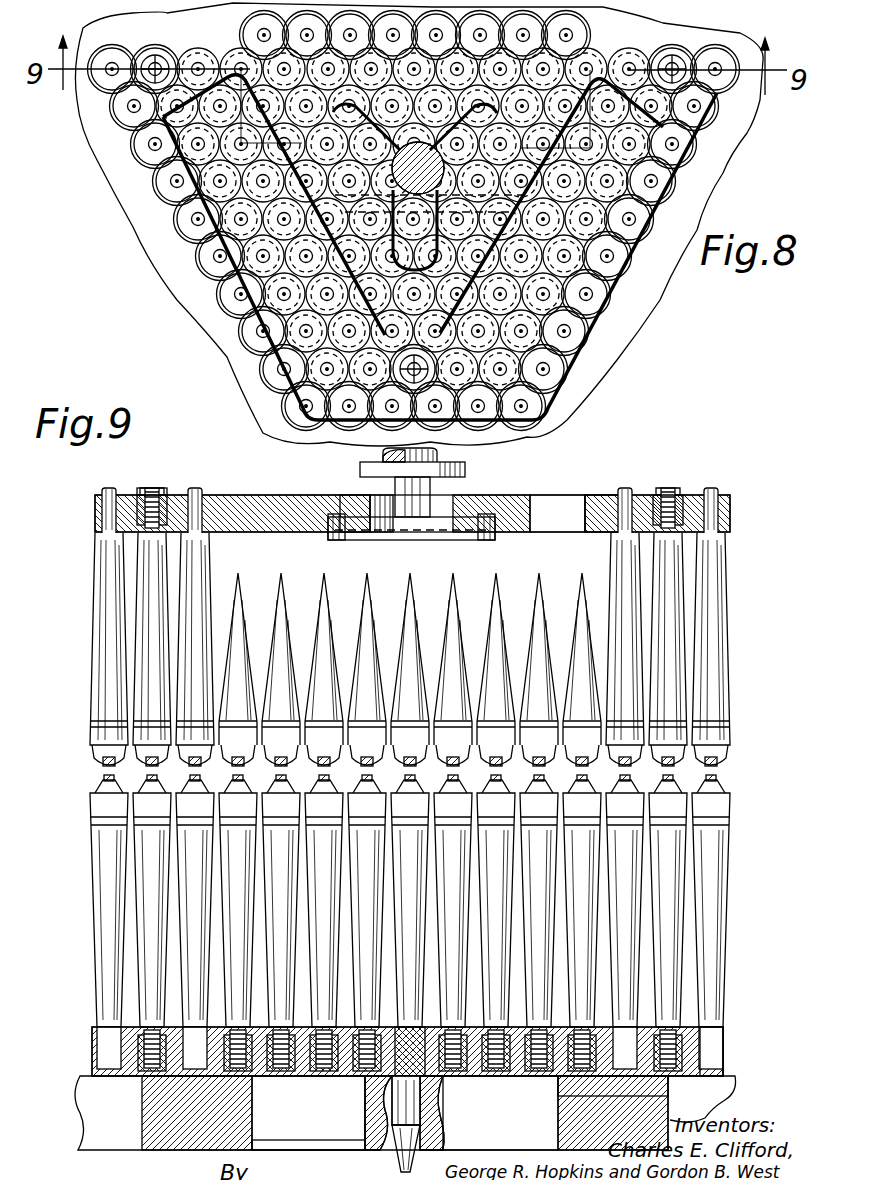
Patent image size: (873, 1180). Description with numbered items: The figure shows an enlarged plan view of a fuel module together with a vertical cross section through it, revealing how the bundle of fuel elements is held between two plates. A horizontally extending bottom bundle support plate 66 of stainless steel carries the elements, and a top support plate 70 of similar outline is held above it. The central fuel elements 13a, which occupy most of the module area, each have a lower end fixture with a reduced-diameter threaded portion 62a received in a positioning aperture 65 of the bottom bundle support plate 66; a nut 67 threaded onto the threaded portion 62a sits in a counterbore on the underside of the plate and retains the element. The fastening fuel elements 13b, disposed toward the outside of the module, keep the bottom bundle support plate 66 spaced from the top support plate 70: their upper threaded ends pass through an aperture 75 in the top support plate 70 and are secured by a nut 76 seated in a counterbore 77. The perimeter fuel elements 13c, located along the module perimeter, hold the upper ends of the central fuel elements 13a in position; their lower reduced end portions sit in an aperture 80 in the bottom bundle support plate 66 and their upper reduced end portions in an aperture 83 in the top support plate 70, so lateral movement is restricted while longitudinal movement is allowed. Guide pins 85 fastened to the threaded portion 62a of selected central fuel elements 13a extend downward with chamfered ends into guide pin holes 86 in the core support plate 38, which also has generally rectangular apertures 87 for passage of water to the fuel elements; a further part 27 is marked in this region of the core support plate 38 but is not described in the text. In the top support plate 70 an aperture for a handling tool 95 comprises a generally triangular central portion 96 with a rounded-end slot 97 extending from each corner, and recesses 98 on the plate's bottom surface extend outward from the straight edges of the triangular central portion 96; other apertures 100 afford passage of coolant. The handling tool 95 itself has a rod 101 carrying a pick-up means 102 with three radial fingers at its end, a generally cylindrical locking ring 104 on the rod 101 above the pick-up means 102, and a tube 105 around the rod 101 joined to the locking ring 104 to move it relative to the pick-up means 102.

In FIG. 8, the apertures 100 is at (120, 146).
In FIG. 9, the apertures 100 is at (567, 505).
In FIG. 8, the triangular central portion 96 is at (440, 88).
In FIG. 9, the triangular central portion 96 is at (350, 495).
In FIG. 8, the slot 97 is at (333, 112).
In FIG. 8, the recesses 98 is at (435, 160).
In FIG. 9, the top support plate 70 is at (730, 518).
In FIG. 9, the aperture 75 is at (137, 527).
In FIG. 9, the nut 76 is at (143, 490).
In FIG. 9, the counterbore 77 is at (170, 497).
In FIG. 9, the aperture 83 is at (615, 495).
In FIG. 9, the handling tool 95 is at (455, 538).
In FIG. 9, the rod 101 is at (413, 503).
In FIG. 9, the pick-up means 102 is at (480, 537).
In FIG. 9, the locking ring 104 is at (465, 470).
In FIG. 9, the tube 105 is at (440, 460).
In FIG. 9, the central fuel elements 13a is at (325, 573).
In FIG. 9, the fastening fuel element 13b is at (147, 613).
In FIG. 9, the perimeter fuel elements 13c is at (107, 583).
In FIG. 9, the positioning aperture 65 is at (693, 1024).
In FIG. 9, the bottom bundle support plate 66 is at (725, 1056).
In FIG. 9, the core support plate 38 is at (197, 1135).
In FIG. 9, the threaded portion 62a is at (280, 1076).
In FIG. 9, the nut 67 is at (562, 1084).
In FIG. 9, the aperture 80 is at (575, 1110).
In FIG. 9, the chamber 27 is at (515, 1134).
In FIG. 9, the guide pins 85 is at (395, 1160).
In FIG. 9, the guide pin holes 86 is at (375, 1150).
In FIG. 9, the apertures 87 is at (313, 1142).